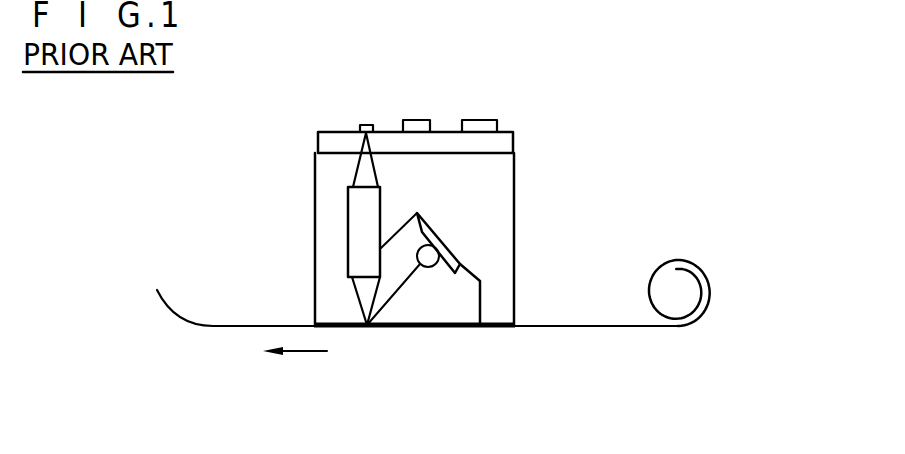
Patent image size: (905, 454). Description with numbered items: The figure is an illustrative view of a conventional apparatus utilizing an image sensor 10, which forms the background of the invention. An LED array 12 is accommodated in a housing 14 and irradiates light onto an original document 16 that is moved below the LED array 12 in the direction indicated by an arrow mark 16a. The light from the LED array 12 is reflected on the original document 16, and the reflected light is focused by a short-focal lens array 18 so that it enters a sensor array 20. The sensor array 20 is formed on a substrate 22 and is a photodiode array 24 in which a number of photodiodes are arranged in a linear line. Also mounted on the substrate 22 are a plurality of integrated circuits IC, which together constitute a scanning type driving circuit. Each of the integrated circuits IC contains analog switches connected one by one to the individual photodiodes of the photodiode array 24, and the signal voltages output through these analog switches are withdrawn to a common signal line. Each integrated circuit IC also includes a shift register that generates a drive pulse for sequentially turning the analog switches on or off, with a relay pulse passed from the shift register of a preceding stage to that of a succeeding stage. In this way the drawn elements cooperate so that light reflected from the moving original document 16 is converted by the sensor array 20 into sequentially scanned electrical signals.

The image sensor 10 is at (240, 165).
The LED array 12 is at (458, 263).
The housing 14 is at (495, 207).
The original document 16 is at (710, 284).
The arrow mark 16a is at (310, 351).
The short-focal lens array 18 is at (365, 213).
The sensor array 20 is at (322, 120).
The substrate 22 is at (502, 143).
The photodiode array 24 is at (371, 125).
The integrated circuits IC is at (418, 124).